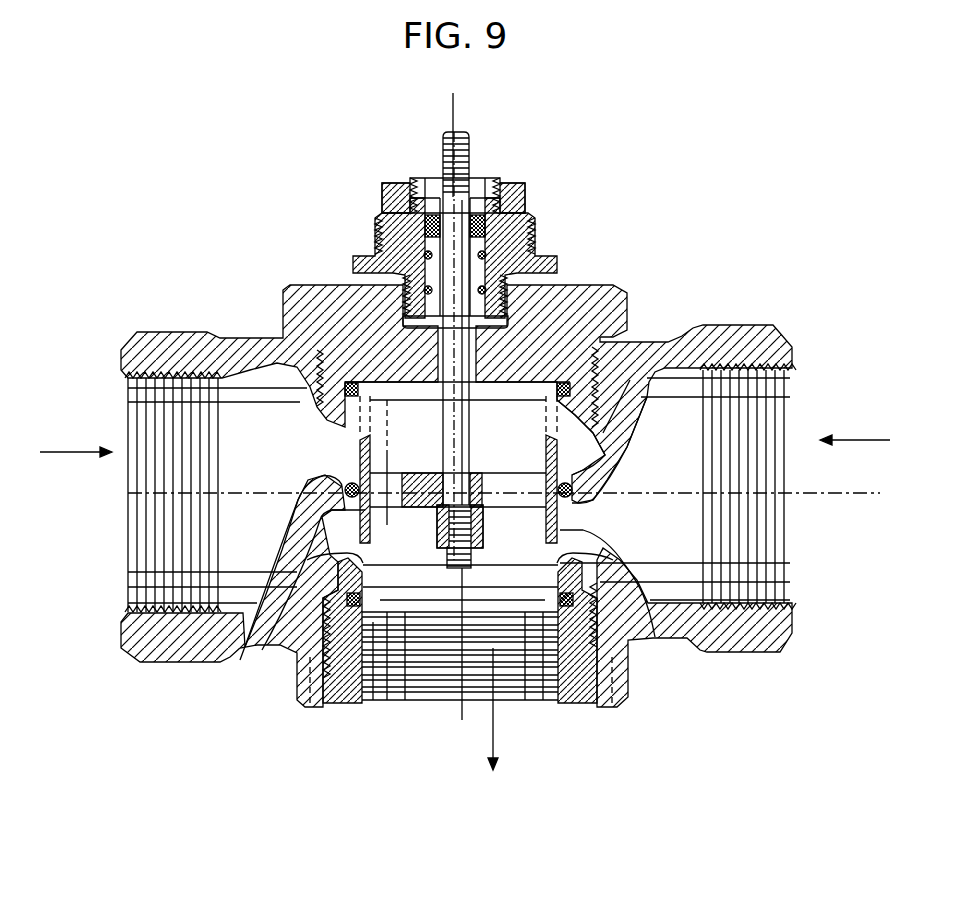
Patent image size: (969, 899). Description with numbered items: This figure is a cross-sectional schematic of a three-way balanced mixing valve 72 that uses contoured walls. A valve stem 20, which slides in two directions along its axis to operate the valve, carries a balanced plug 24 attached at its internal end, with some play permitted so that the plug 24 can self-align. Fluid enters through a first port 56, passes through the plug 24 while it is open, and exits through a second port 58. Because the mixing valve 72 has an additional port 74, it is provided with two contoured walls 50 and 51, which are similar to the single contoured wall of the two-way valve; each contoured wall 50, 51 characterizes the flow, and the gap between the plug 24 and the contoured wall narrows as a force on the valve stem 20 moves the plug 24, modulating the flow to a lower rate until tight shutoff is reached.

The valve stem 20 is at (457, 130).
The balanced plug 24 is at (655, 637).
The contoured wall 50 is at (357, 443).
The contoured wall 51 is at (240, 660).
The first port 56 is at (752, 520).
The second port 58 is at (165, 537).
The three-way balanced mixing valve 72 is at (252, 774).
The additional port 74 is at (427, 660).